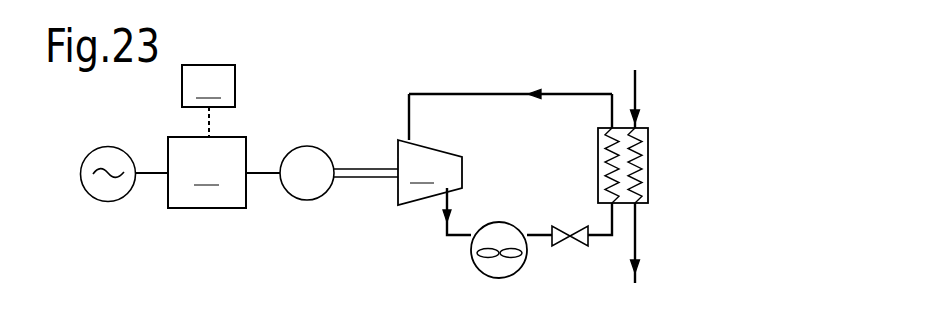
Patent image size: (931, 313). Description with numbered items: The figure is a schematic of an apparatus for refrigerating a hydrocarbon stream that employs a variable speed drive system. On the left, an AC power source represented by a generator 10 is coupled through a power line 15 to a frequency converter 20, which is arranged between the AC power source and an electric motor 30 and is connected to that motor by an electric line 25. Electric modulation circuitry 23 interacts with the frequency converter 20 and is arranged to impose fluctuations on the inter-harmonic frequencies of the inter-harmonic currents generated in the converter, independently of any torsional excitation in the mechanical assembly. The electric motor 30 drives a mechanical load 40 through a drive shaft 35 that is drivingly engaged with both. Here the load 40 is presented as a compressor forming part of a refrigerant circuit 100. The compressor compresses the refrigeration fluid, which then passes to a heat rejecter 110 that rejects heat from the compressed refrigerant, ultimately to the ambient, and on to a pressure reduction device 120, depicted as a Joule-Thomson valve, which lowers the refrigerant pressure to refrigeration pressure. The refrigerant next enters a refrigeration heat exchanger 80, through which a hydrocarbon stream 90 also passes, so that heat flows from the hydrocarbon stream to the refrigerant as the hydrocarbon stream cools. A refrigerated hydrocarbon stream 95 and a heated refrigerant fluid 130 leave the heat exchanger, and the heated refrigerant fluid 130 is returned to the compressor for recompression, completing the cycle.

The generator 10 is at (113, 146).
The power line 15 is at (151, 168).
The frequency converter 20 is at (207, 172).
The electric modulation circuitry 23 is at (208, 101).
The electric line 25 is at (265, 180).
The electric motor 30 is at (310, 202).
The drive shaft 35 is at (378, 168).
The mechanical load 40 is at (430, 172).
The refrigeration heat exchanger 80 is at (646, 172).
The hydrocarbon stream 90 is at (638, 101).
The refrigerated hydrocarbon stream 95 is at (638, 244).
The refrigerant circuit 100 is at (548, 176).
The heat rejecter 110 is at (472, 258).
The pressure reduction device 120 is at (555, 245).
The heated refrigerant fluid 130 is at (566, 93).